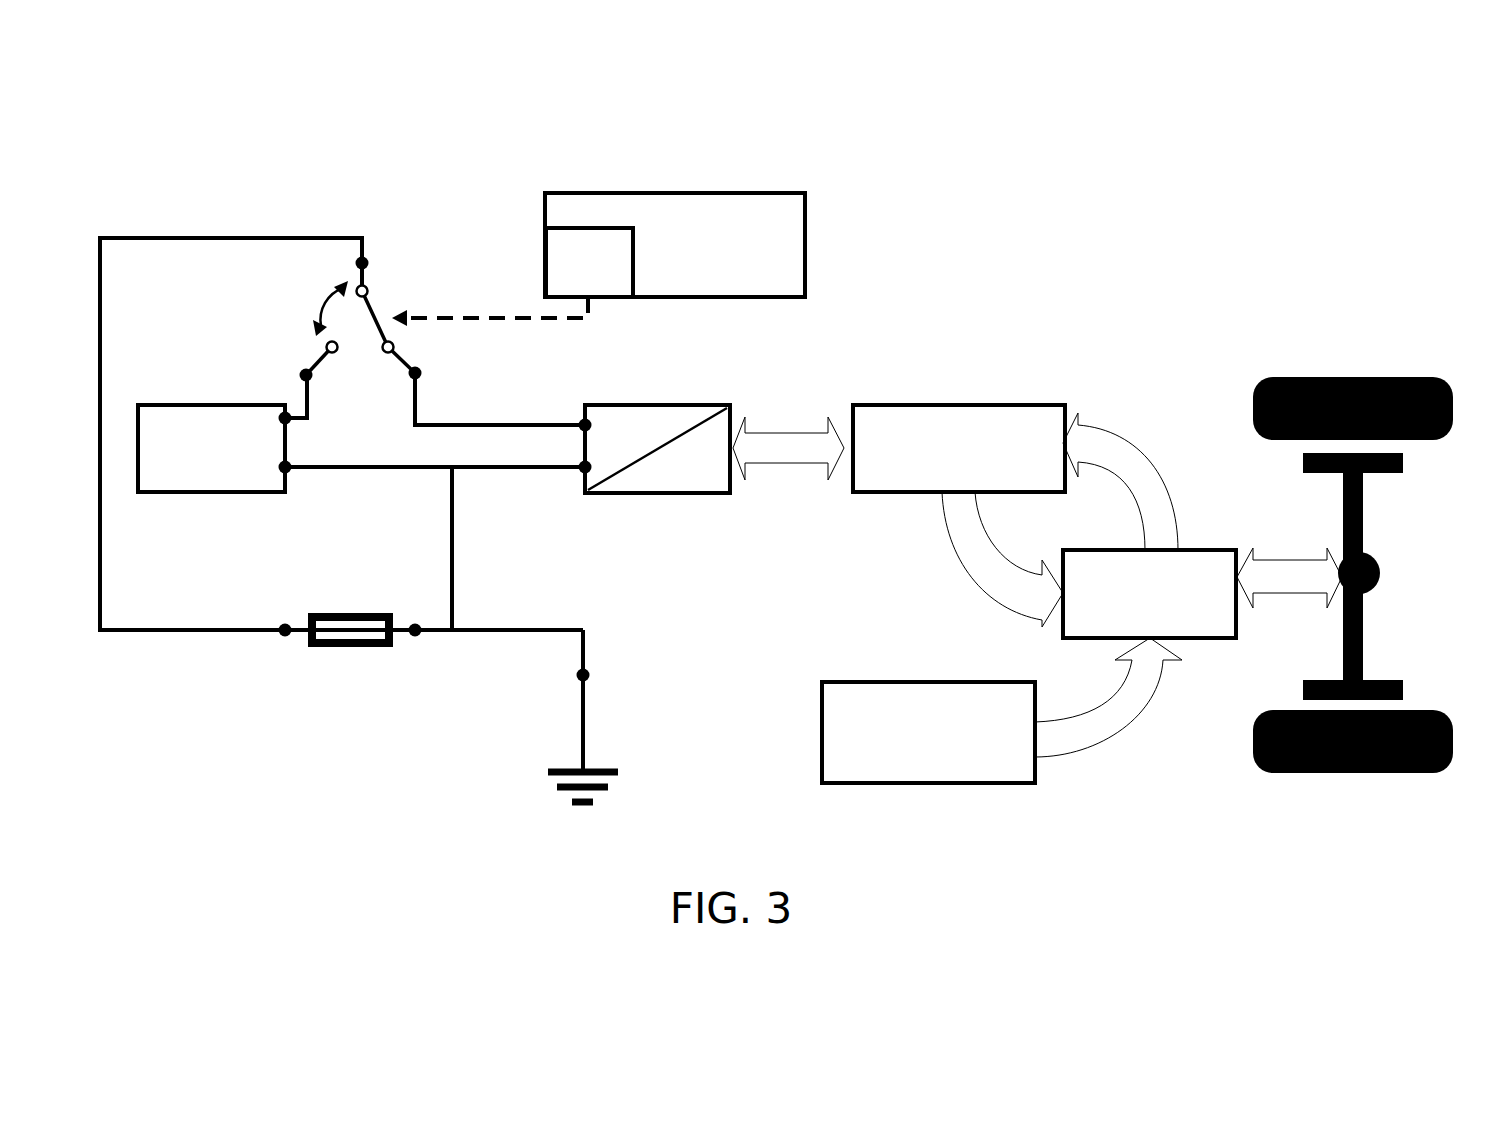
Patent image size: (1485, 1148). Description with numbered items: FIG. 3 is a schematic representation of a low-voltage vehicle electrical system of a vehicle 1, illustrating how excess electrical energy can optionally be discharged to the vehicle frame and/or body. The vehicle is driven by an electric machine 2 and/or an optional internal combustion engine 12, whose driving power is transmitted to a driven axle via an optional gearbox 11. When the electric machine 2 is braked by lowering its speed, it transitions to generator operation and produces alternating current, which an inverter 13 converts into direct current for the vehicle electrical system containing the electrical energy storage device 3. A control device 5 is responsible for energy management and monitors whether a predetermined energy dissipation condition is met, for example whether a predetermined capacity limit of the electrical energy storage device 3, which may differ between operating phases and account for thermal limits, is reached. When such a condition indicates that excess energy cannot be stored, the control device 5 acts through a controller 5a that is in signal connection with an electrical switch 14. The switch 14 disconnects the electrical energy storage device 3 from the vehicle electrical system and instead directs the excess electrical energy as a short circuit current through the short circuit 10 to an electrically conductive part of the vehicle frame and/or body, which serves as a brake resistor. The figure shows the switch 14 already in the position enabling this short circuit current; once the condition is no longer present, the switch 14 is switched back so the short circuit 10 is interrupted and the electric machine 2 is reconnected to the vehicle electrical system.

The vehicle 1 is at (1170, 186).
The electric machine 2 is at (955, 405).
The electrical energy storage device 3 is at (184, 405).
The control device 5 is at (790, 205).
The controller 5a is at (585, 243).
The short circuit 10 is at (162, 203).
The gearbox 11 is at (1195, 568).
The internal combustion engine 12 is at (977, 773).
The inverter 13 is at (653, 447).
The electrical switch 14 is at (375, 320).